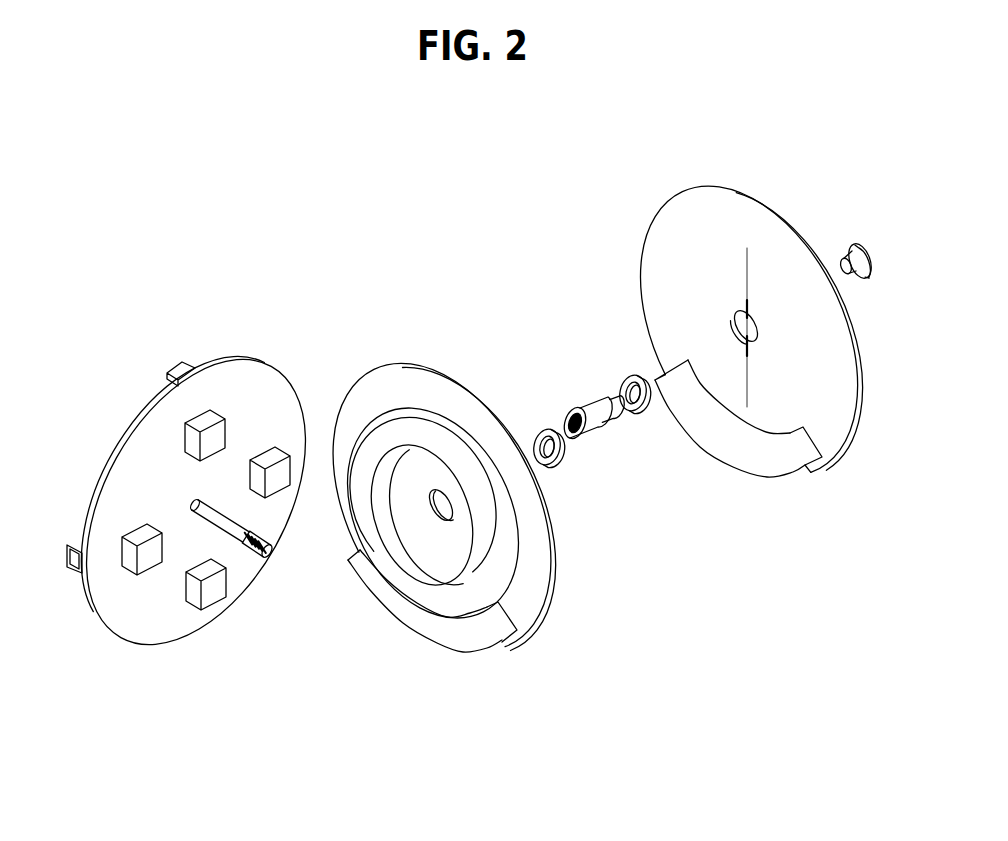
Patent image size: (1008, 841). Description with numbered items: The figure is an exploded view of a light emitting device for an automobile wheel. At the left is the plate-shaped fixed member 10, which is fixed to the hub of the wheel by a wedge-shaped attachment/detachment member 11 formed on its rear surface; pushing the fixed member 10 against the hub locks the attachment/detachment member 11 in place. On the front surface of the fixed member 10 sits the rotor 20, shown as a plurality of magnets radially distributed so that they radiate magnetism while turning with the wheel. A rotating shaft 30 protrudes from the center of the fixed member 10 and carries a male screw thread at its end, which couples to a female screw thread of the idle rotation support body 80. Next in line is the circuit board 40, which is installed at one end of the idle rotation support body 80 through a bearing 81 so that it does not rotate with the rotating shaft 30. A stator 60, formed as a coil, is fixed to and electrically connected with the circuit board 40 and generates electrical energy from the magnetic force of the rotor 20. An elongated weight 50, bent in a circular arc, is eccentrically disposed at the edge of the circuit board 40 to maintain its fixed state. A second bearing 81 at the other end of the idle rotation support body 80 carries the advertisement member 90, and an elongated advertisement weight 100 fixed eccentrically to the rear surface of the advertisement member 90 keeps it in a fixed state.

The fixed member 10 is at (133, 460).
The attachment/detachment member 11 is at (178, 362).
The rotor 20 is at (187, 435).
The rotating shaft 30 is at (207, 503).
The circuit board 40 is at (543, 563).
The weight 50 is at (455, 645).
The stator 60 is at (415, 410).
The idle rotation support body 80 is at (585, 400).
The bearing 81 is at (540, 430).
The advertisement member 90 is at (652, 267).
The advertisement weight 100 is at (752, 463).